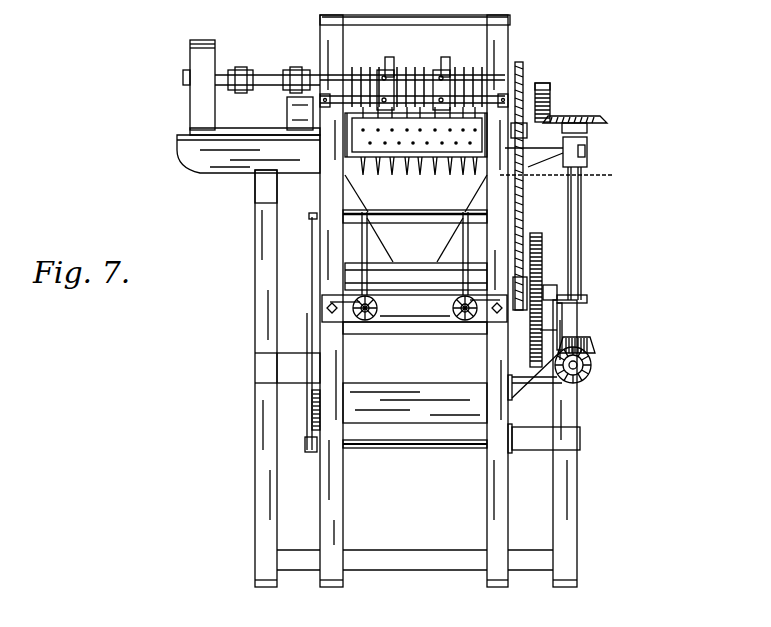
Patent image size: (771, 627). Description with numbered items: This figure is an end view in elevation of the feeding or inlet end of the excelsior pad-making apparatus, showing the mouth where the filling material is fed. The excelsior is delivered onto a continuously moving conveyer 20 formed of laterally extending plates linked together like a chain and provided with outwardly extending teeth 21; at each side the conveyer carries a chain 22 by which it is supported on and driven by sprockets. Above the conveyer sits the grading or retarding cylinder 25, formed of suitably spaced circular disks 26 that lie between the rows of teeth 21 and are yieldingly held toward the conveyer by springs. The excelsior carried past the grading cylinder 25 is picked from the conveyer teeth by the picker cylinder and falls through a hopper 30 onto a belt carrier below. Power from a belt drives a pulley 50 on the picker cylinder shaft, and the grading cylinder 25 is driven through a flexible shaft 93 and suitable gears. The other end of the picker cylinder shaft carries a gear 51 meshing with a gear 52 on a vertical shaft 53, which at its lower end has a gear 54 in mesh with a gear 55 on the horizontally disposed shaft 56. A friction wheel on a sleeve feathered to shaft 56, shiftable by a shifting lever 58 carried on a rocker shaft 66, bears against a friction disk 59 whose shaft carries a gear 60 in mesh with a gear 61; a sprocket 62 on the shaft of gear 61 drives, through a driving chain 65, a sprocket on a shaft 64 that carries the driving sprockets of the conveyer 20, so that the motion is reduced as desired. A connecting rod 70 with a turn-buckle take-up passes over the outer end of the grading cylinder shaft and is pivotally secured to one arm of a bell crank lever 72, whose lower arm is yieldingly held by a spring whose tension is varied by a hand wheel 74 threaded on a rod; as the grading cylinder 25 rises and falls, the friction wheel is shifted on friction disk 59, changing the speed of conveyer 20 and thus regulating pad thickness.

The flexible shaft 93 is at (263, 80).
The pulley 50 is at (290, 118).
The chain 22 is at (345, 153).
The grading cylinder 25 is at (353, 68).
The circular disks 26 is at (467, 65).
The teeth 21 is at (478, 160).
The hopper 30 is at (355, 198).
The bell crank lever 72 is at (462, 247).
The connecting rod 70 is at (322, 298).
The hand wheel 74 is at (450, 322).
The rocker shaft 66 is at (430, 448).
The driving chain 65 is at (522, 185).
The shaft 64 is at (528, 131).
The gear 51 is at (550, 94).
The gear 52 is at (605, 119).
The conveyer 20 is at (566, 175).
The vertical shaft 53 is at (580, 233).
The gear 61 is at (547, 270).
The sprocket 62 is at (557, 287).
The friction disk 59 is at (562, 333).
The gear 54 is at (594, 344).
The gear 55 is at (589, 373).
The shaft 56 is at (580, 372).
The gear 60 is at (545, 360).
The shifting lever 58 is at (573, 426).